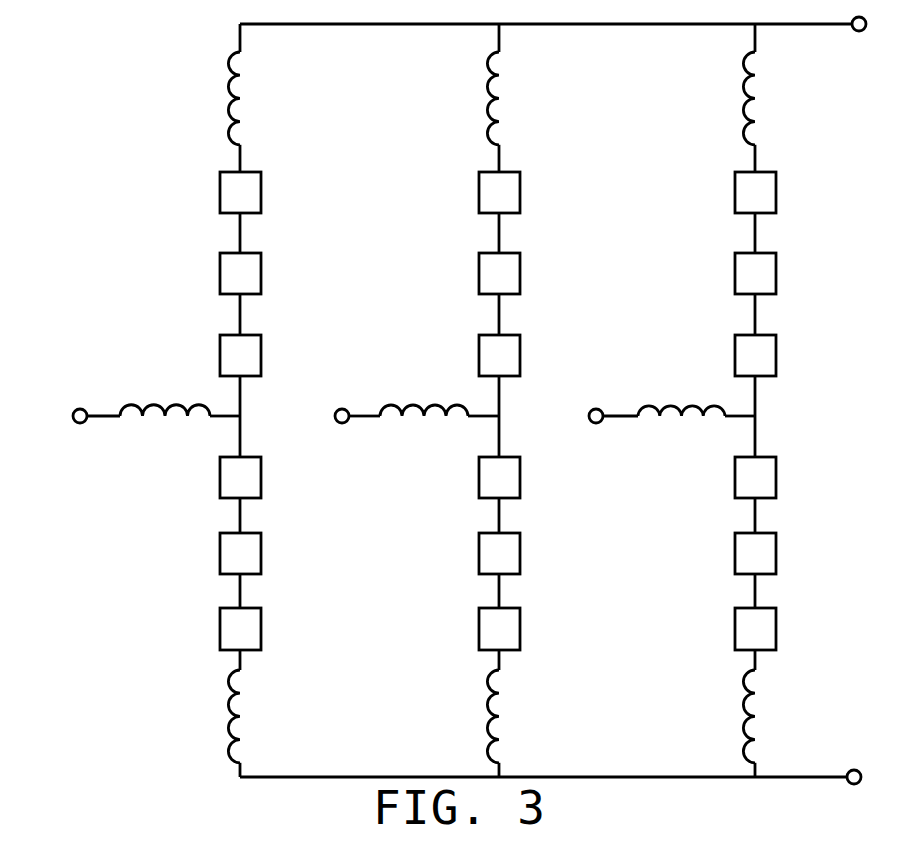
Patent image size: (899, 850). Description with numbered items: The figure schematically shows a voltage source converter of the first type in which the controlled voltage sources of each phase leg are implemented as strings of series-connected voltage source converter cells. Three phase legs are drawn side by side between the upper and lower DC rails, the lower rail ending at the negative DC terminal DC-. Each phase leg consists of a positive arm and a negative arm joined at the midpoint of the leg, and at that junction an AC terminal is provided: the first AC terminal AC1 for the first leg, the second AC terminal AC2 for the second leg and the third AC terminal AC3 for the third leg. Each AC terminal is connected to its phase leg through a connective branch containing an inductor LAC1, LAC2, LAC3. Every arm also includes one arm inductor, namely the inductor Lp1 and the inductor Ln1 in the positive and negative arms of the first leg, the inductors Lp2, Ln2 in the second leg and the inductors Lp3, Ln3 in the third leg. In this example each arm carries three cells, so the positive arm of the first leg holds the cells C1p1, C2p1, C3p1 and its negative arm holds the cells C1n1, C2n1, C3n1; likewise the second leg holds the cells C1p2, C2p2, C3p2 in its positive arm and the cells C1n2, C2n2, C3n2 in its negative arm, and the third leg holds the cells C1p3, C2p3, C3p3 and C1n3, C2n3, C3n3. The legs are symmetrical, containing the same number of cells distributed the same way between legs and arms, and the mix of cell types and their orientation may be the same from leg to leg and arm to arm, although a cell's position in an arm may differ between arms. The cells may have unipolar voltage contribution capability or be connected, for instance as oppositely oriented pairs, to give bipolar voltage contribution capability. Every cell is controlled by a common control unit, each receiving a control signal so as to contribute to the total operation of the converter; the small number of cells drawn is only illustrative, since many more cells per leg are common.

The inductor Lp1 is at (194, 98).
The cell C1p1 is at (193, 193).
The cell C2p1 is at (193, 274).
The cell C3p1 is at (193, 356).
The cell C1n1 is at (193, 477).
The cell C2n1 is at (193, 553).
The cell C3n1 is at (193, 629).
The inductor Ln1 is at (199, 716).
The first AC terminal AC1 is at (66, 400).
The inductor LAC1 is at (180, 429).
The inductor Lp2 is at (453, 98).
The cell C1p2 is at (452, 193).
The cell C2p2 is at (452, 274).
The cell C3p2 is at (452, 356).
The cell C1n2 is at (452, 477).
The cell C2n2 is at (452, 553).
The cell C3n2 is at (452, 629).
The inductor Ln2 is at (458, 716).
The second AC terminal AC2 is at (327, 400).
The inductor LAC2 is at (439, 429).
The inductor Lp3 is at (709, 98).
The cell C1p3 is at (708, 193).
The cell C2p3 is at (708, 274).
The cell C3p3 is at (708, 356).
The cell C1n3 is at (708, 477).
The cell C2n3 is at (708, 553).
The cell C3n3 is at (708, 629).
The inductor Ln3 is at (714, 716).
The third AC terminal AC3 is at (583, 400).
The inductor LAC3 is at (696, 430).
The negative DC terminal DC- is at (564, 758).